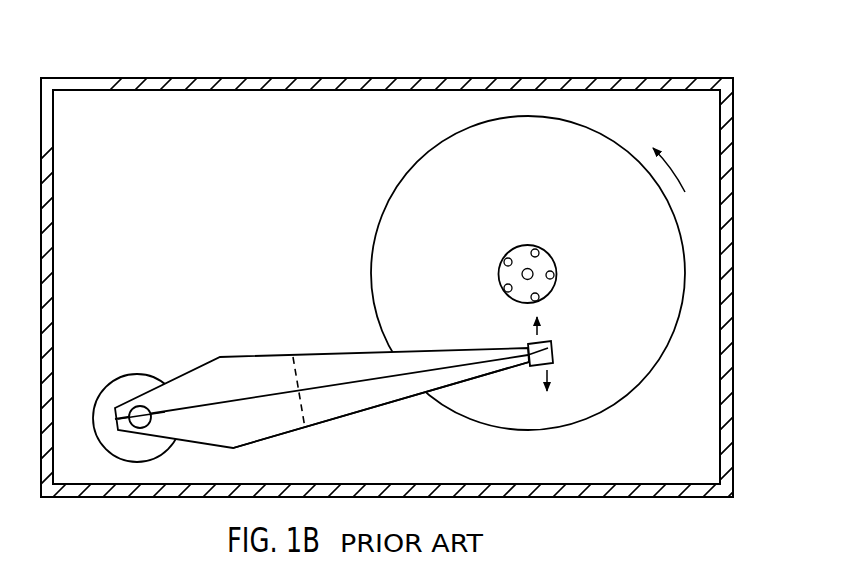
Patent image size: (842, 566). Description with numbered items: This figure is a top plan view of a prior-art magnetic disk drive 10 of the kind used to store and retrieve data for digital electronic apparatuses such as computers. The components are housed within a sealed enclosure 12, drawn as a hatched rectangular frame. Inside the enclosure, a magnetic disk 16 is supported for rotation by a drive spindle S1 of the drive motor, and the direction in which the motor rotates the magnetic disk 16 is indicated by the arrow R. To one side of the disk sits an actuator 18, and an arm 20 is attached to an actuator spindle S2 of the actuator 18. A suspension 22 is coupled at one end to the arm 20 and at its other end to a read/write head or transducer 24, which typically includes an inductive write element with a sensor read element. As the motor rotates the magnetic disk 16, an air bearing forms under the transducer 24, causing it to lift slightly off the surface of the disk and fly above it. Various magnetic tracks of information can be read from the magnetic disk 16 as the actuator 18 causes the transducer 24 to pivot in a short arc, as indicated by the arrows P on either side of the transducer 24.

The magnetic disk drive 10 is at (421, 283).
The sealed enclosure 12 is at (563, 488).
The magnetic disk 16 is at (506, 194).
The actuator 18 is at (118, 382).
The arm 20 is at (247, 368).
The suspension 22 is at (353, 408).
The read/write head or transducer 24 is at (553, 347).
The drive spindle S1 is at (545, 256).
The actuator spindle S2 is at (142, 406).
The arrows indicating transducer pivot P is at (551, 356).
The arrow indicating disk rotation R is at (673, 170).